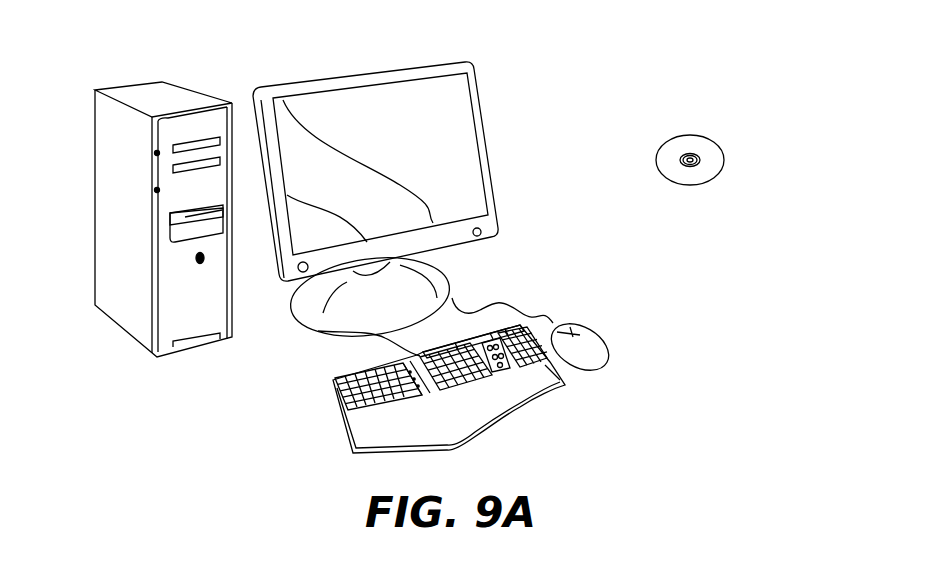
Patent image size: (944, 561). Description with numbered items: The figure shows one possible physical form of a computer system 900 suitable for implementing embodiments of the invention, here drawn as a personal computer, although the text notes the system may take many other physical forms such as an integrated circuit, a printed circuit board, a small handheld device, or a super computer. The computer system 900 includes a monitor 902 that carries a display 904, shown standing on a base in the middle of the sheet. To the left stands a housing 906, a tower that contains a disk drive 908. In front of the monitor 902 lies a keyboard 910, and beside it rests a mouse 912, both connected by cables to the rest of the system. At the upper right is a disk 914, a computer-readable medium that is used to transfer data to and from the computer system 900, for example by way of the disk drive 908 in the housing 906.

The computer system 900 is at (612, 45).
The monitor 902 is at (493, 167).
The display 904 is at (445, 103).
The housing 906 is at (152, 92).
The disk drive 908 is at (213, 213).
The keyboard 910 is at (343, 420).
The mouse 912 is at (603, 337).
The disk 914 is at (707, 137).